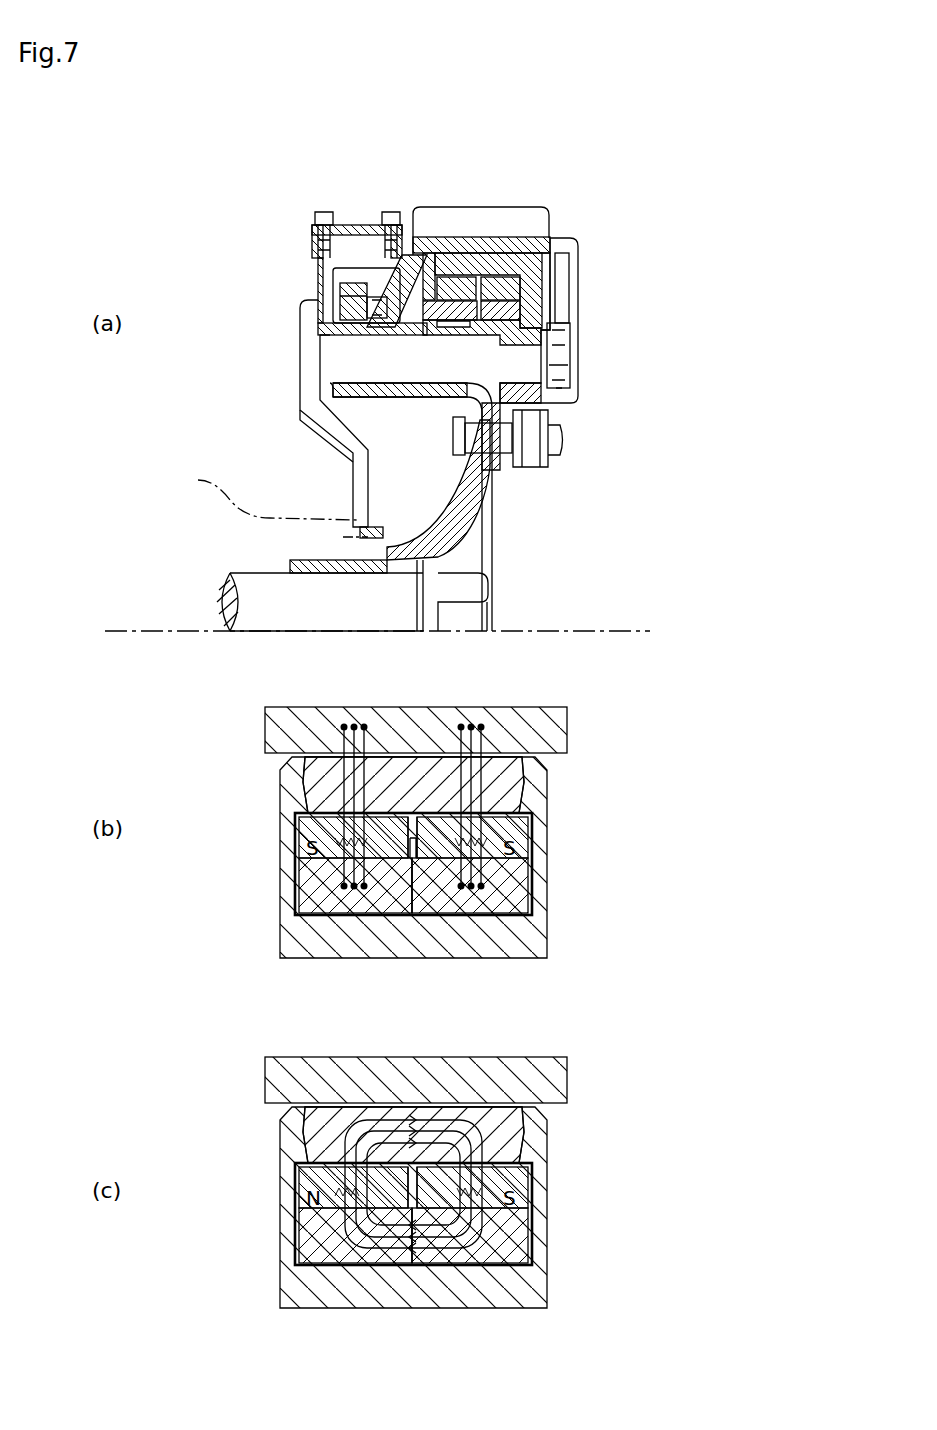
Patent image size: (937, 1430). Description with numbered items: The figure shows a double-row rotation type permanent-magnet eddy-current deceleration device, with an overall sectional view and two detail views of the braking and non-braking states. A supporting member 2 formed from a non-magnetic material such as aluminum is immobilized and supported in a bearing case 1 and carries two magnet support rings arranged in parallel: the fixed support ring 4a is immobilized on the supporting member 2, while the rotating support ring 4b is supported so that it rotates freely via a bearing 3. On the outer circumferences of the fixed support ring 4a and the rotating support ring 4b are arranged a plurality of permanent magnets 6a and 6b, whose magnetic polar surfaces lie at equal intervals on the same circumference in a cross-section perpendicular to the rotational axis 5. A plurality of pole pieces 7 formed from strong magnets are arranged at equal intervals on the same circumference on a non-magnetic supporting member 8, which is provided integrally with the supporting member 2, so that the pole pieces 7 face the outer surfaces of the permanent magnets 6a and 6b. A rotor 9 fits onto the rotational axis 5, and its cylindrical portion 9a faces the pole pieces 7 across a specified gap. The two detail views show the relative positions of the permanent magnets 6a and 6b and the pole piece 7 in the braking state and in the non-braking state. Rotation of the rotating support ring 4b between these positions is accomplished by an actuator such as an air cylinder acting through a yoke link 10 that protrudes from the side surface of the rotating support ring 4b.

The bearing case 1 is at (320, 525).
The supporting member 2 is at (302, 378).
The bearing 3 is at (437, 322).
The fixed support ring 4a is at (490, 306).
The rotating support ring 4b is at (452, 306).
The rotational axis 5 is at (336, 612).
The permanent magnets 6a is at (500, 282).
The permanent magnets 6b is at (447, 283).
The pole piece 7 is at (494, 283).
The supporting member 8 is at (530, 272).
The rotor 9 is at (556, 283).
The cylindrical portion 9a is at (463, 245).
The yoke link 10 is at (400, 298).